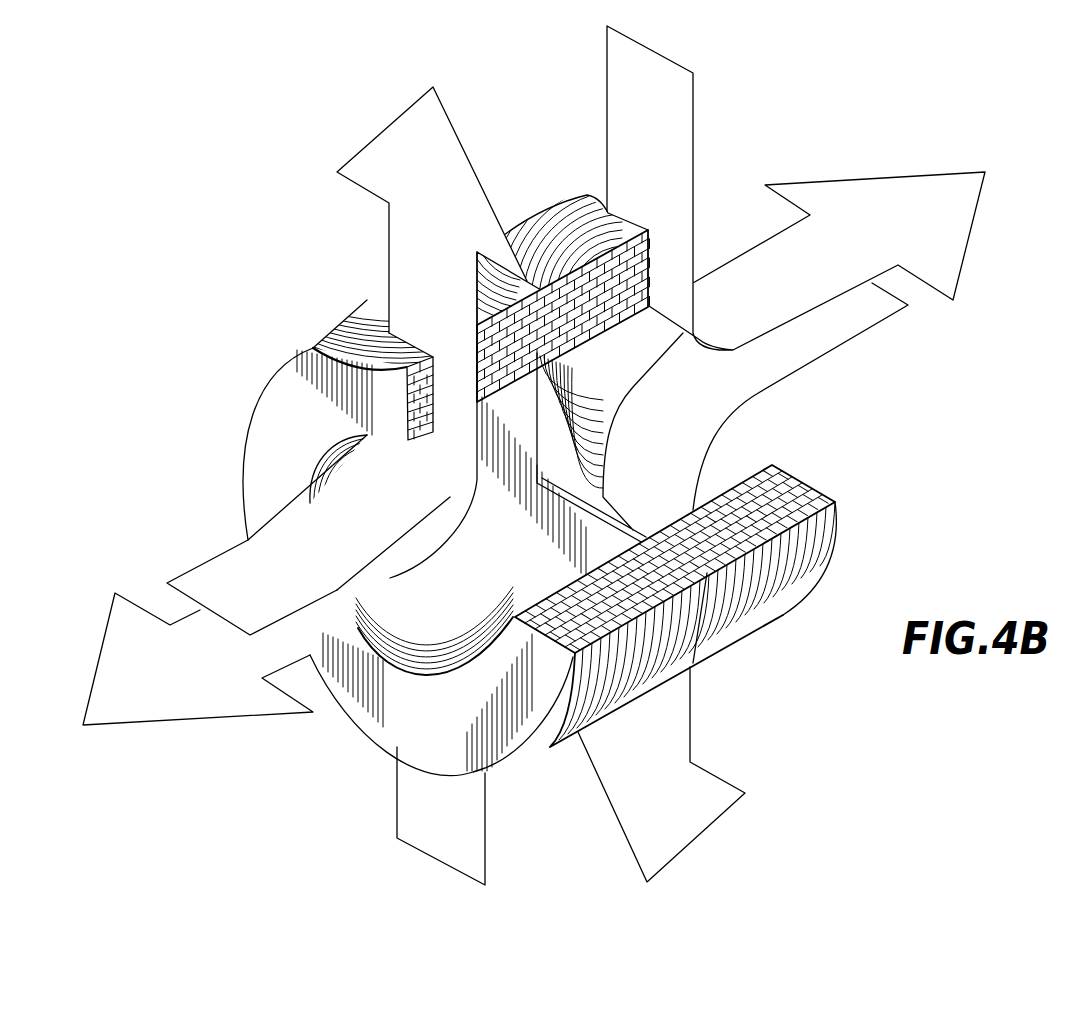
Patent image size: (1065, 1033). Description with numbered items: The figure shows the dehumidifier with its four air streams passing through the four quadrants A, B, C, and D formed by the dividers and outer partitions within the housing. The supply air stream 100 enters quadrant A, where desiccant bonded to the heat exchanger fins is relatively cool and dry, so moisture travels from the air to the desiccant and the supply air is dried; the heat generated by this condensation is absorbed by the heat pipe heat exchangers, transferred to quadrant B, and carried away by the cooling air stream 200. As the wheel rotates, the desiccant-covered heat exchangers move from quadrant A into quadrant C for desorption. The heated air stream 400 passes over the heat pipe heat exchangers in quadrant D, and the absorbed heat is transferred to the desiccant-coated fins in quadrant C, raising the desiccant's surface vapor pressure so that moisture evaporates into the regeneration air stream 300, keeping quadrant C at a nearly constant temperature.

The supply air stream 100 is at (423, 857).
The cooling air stream 200 is at (710, 826).
The regeneration air stream 300 is at (447, 110).
The heated air stream 400 is at (970, 242).
The quadrant A is at (588, 700).
The quadrant B is at (767, 597).
The quadrant C is at (478, 360).
The quadrant D is at (592, 285).